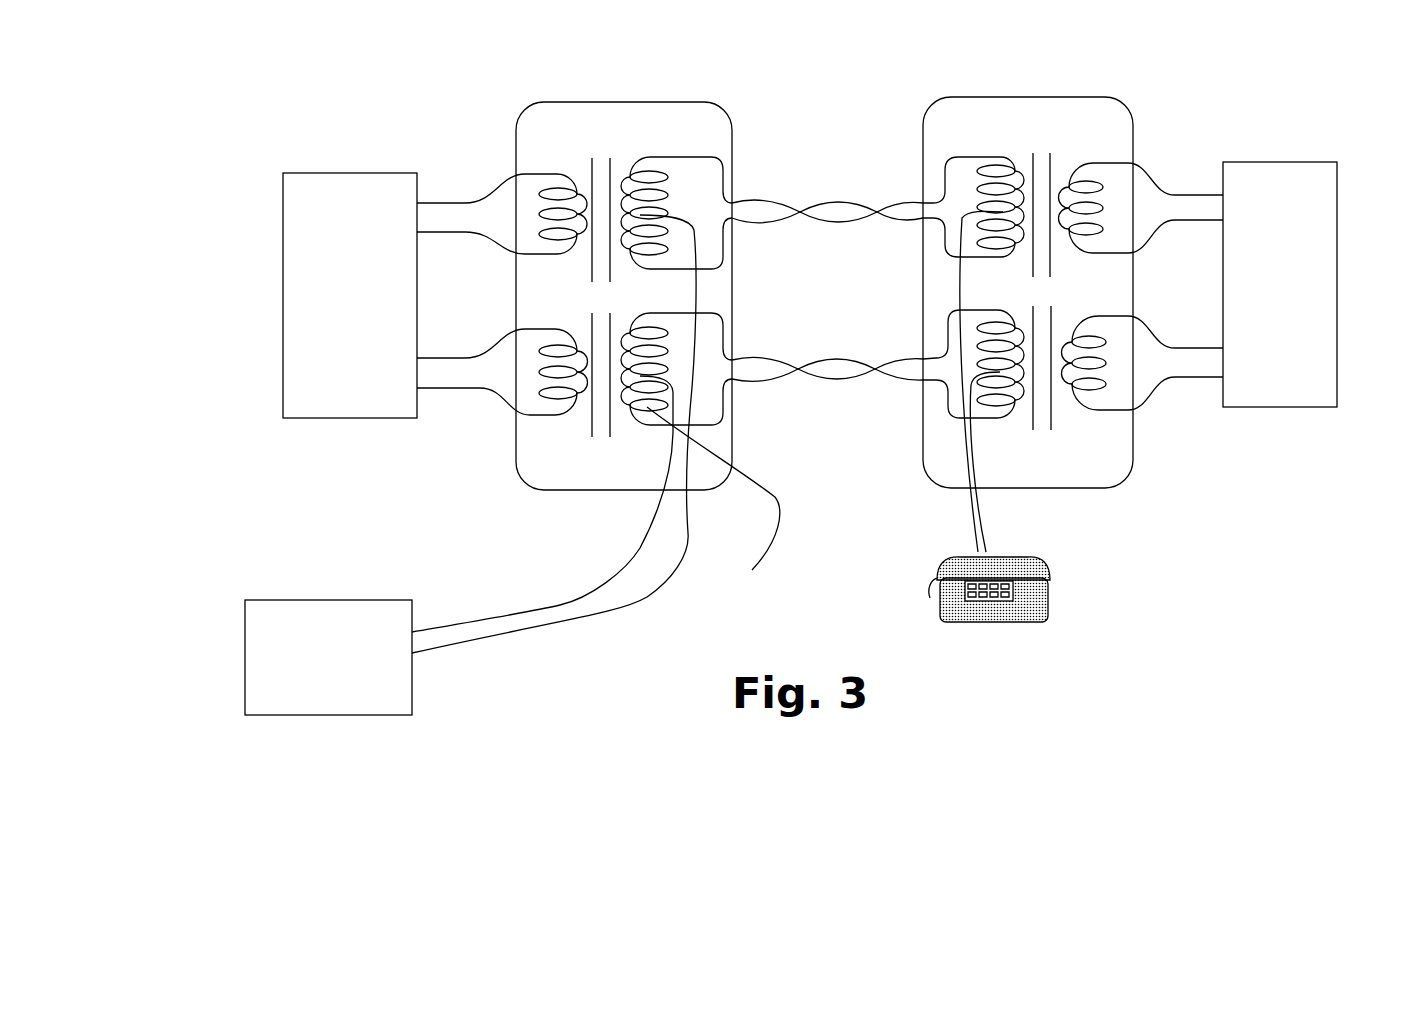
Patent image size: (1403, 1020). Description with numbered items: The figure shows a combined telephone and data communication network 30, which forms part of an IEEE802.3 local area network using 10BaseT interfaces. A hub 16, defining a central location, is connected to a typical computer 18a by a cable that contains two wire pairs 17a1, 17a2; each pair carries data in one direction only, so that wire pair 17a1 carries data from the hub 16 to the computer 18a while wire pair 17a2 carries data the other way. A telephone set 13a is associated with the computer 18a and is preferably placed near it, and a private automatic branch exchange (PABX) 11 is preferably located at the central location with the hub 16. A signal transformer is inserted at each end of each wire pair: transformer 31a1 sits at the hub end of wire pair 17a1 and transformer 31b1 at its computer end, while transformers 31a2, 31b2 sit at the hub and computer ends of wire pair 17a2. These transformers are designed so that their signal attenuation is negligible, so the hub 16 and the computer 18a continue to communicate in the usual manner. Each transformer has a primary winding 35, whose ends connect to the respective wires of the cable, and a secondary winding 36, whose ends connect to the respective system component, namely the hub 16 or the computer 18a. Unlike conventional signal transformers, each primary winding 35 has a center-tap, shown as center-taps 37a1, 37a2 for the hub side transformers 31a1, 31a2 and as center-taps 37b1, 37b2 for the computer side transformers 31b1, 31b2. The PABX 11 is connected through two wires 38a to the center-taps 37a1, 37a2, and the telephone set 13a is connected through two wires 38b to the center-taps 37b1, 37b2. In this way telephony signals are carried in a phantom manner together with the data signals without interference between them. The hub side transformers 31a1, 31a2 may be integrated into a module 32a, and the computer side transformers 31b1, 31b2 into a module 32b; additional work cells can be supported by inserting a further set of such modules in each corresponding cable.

The private automatic branch exchange (PABX) 11 is at (292, 600).
The telephone set 13a is at (1050, 603).
The hub 16 is at (280, 300).
The wire pair 17a1 is at (822, 212).
The wire pair 17a2 is at (882, 370).
The computer 18a is at (1294, 162).
The network 30 is at (437, 115).
The signal transformer 31a1 is at (612, 160).
The signal transformer 31a2 is at (612, 430).
The signal transformer 31b1 is at (1030, 167).
The signal transformer 31b2 is at (1051, 407).
The module 32a is at (590, 108).
The module 32b is at (1010, 102).
The primary winding 35 is at (713, 504).
The secondary winding 36 is at (550, 370).
The center-tap 37a1 is at (692, 222).
The center-tap 37a2 is at (648, 374).
The center-tap 37b1 is at (1003, 212).
The center-tap 37b2 is at (1000, 372).
The wires 38a is at (558, 618).
The wires 38b is at (976, 520).